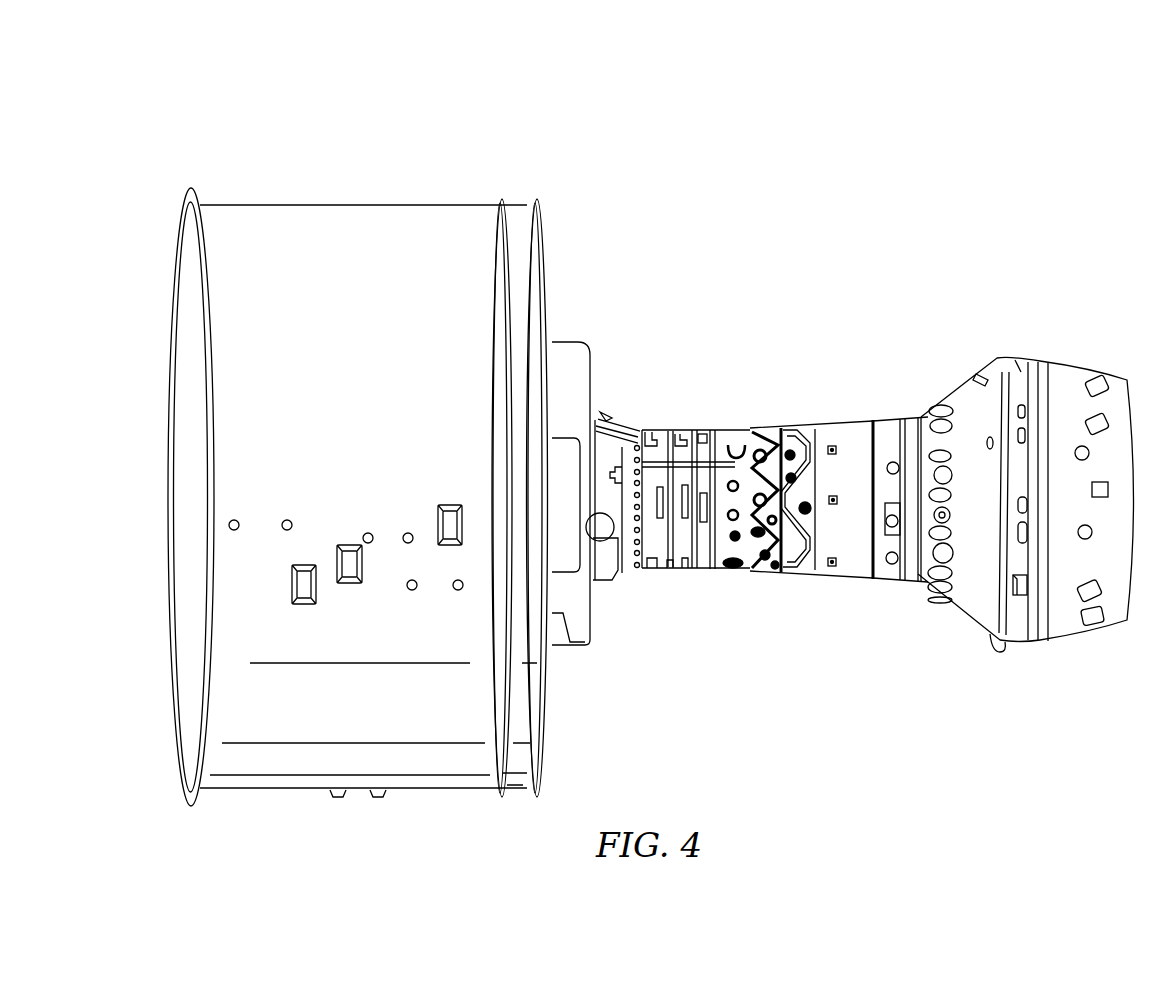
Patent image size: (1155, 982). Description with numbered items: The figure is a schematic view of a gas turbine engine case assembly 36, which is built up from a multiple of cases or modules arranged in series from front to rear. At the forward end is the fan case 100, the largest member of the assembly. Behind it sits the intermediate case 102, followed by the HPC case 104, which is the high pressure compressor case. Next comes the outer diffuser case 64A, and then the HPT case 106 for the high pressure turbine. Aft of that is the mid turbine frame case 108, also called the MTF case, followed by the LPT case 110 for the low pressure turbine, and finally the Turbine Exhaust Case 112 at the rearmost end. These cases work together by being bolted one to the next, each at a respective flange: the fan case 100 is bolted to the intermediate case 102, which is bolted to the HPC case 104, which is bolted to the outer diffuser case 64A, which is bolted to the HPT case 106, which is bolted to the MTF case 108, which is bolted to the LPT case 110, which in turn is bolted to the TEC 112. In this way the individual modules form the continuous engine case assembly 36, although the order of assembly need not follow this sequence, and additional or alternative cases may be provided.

The engine case assembly 36 is at (898, 104).
The fan case 100 is at (180, 172).
The intermediate case 102 is at (637, 405).
The HPC case 104 is at (750, 405).
The outer diffuser case 64A is at (865, 403).
The HPT case 106 is at (920, 402).
The mid turbine frame (MTF) case 108 is at (975, 363).
The LPT case 110 is at (1040, 345).
The Turbine Exhaust Case (TEC) 112 is at (1128, 363).